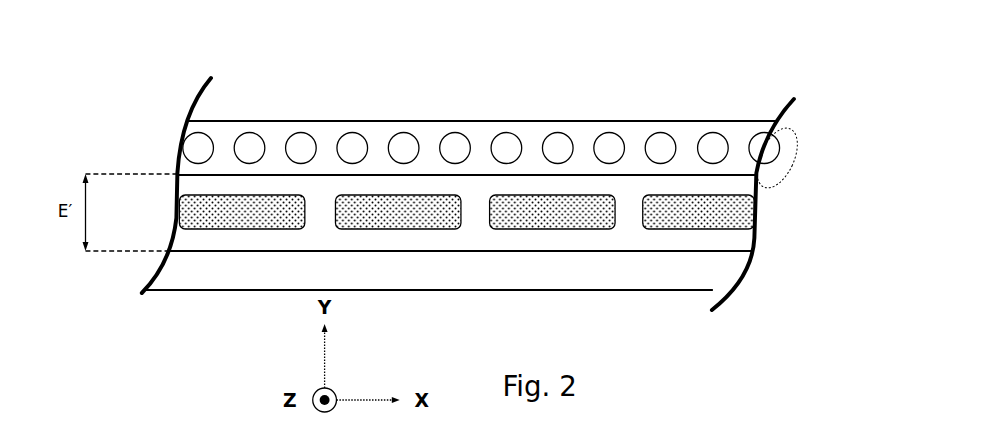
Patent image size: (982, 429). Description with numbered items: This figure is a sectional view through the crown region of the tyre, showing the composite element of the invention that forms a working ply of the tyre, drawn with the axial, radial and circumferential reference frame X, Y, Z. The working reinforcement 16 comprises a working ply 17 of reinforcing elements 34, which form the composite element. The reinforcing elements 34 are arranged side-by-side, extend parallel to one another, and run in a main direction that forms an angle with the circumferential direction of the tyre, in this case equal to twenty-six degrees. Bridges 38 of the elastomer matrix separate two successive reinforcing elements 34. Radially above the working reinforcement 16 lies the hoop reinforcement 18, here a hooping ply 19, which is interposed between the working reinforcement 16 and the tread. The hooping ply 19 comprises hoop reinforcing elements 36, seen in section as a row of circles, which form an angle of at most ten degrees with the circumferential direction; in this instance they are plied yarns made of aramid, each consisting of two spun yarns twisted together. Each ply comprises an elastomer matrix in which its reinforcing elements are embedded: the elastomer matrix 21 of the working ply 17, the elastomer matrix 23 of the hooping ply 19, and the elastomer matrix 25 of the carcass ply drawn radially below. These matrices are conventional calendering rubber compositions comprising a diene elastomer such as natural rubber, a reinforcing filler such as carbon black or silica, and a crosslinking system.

The working reinforcement 16 is at (157, 208).
The working ply 17 is at (746, 240).
The hoop reinforcement 18 is at (154, 150).
The hooping ply 19 is at (481, 127).
The elastomer matrix 21 is at (397, 233).
The elastomer matrix 23 is at (332, 134).
The elastomer matrix 25 is at (227, 258).
The reinforcing elements 34 is at (558, 215).
The hoop reinforcing elements 36 is at (615, 144).
The bridges 38 is at (468, 215).